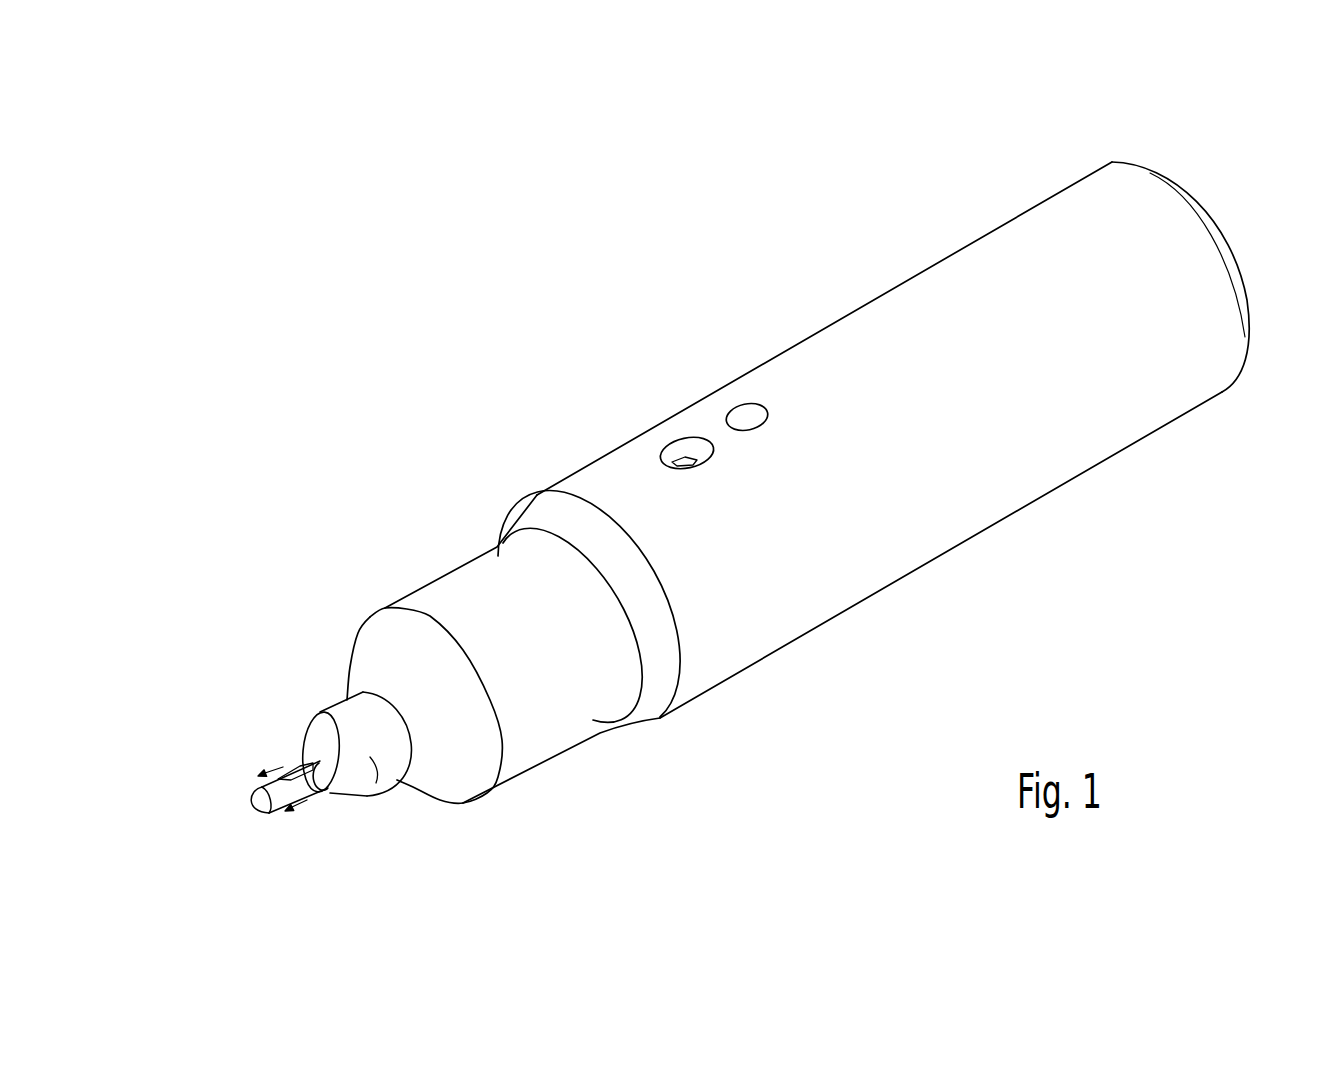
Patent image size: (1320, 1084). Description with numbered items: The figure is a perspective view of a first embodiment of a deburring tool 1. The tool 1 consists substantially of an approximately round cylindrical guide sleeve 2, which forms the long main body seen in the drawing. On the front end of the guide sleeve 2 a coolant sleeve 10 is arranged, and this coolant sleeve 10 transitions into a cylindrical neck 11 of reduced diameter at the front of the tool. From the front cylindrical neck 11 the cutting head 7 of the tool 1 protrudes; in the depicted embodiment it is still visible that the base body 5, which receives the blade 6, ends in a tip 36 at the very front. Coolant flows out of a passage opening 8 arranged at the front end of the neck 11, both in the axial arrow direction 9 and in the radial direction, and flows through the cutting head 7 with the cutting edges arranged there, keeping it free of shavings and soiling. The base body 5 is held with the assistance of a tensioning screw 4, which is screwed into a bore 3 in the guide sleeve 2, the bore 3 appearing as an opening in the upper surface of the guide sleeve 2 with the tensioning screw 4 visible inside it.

The tool 1 is at (861, 238).
The guide sleeve 2 is at (937, 512).
The bore 3 is at (688, 447).
The tensioning screw 4 is at (683, 460).
The base body 5 is at (270, 813).
The blade 6 is at (289, 773).
The cutting head 7 is at (256, 709).
The passage opening 8 is at (323, 787).
The axial arrow direction 9 is at (290, 760).
The coolant sleeve 10 is at (550, 733).
The cylindrical neck 11 is at (394, 757).
The tip 36 is at (256, 802).